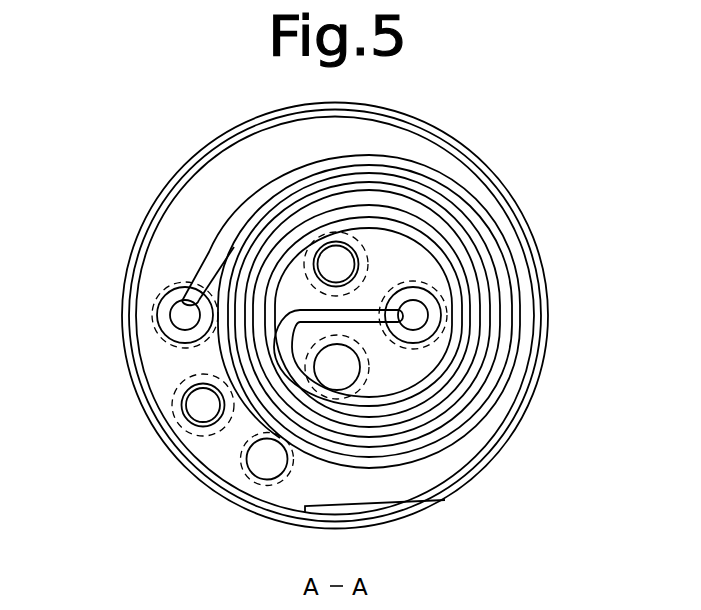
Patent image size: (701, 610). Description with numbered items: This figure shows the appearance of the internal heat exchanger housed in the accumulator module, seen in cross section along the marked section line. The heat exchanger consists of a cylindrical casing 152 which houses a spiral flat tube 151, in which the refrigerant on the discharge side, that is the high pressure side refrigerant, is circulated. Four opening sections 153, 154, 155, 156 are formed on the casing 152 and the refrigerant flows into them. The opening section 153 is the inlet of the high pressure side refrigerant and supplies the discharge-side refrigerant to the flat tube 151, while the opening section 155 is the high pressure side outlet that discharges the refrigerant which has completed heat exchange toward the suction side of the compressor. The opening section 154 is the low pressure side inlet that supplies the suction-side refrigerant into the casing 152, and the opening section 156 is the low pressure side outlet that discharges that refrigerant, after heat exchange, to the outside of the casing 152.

The spiral flat tube 151 is at (473, 198).
The cylindrical casing 152 is at (133, 380).
The opening section 153 is at (181, 300).
The opening section 154 is at (360, 370).
The opening section 155 is at (436, 328).
The opening section 156 is at (243, 470).